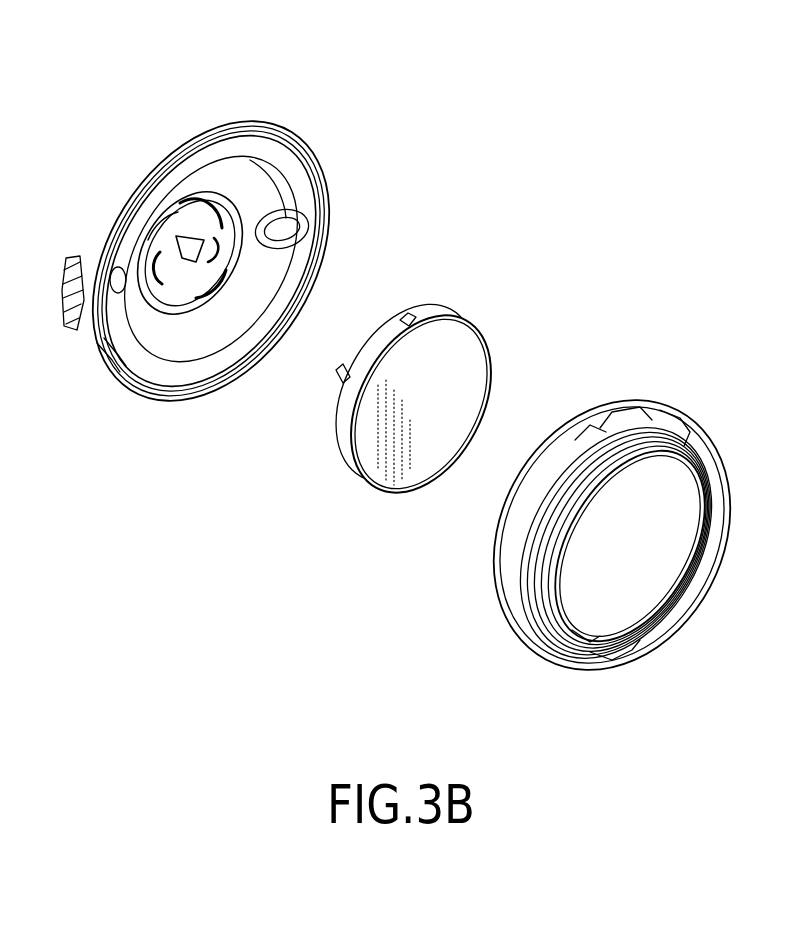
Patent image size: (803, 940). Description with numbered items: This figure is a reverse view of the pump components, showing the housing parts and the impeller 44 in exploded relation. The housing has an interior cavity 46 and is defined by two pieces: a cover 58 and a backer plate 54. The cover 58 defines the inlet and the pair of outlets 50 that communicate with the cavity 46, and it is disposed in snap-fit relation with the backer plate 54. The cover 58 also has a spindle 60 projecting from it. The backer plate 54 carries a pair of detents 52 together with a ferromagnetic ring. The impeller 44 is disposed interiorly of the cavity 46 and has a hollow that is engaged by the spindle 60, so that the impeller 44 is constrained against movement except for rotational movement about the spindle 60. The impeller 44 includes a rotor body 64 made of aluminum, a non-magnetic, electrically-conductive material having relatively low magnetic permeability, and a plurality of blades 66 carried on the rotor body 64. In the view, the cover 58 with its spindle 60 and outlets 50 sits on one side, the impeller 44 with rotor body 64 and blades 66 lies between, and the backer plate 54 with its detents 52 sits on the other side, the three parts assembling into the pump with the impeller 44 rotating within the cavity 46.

The impeller 44 is at (450, 245).
The interior cavity 46 is at (283, 167).
The outlets 50 is at (70, 326).
The detents 52 is at (622, 425).
The backer plate 54 is at (650, 310).
The cover 58 is at (132, 140).
The spindle 60 is at (218, 200).
The rotor body 64 is at (437, 452).
The blades 66 is at (402, 313).